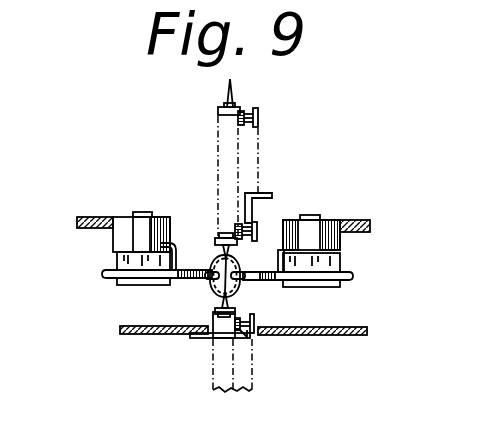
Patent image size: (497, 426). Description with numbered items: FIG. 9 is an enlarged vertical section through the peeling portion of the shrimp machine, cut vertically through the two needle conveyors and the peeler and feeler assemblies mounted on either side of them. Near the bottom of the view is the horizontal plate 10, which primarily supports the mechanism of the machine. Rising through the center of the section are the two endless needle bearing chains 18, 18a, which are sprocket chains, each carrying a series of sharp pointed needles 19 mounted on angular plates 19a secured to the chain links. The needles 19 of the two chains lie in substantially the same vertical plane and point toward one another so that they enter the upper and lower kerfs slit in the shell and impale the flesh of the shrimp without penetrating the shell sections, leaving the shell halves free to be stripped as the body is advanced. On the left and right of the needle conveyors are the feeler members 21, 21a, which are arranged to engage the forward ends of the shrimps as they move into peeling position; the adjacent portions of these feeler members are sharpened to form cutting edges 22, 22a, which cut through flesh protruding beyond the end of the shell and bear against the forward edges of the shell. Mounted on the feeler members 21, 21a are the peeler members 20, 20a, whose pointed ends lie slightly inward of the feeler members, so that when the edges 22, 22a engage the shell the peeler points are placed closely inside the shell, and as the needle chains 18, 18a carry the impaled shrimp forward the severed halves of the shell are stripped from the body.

The horizontal plate 10 is at (318, 327).
The needle bearing chain 18 is at (259, 117).
The needle bearing chain 18a is at (255, 359).
The needle 19 is at (233, 91).
The angular plate 19a is at (218, 110).
The peeler member 20 is at (353, 277).
The peeler member 20a is at (104, 274).
The feeler member 21 is at (340, 246).
The feeler member 21a is at (133, 243).
The cutting edge 22 is at (243, 266).
The cutting edge 22a is at (211, 263).